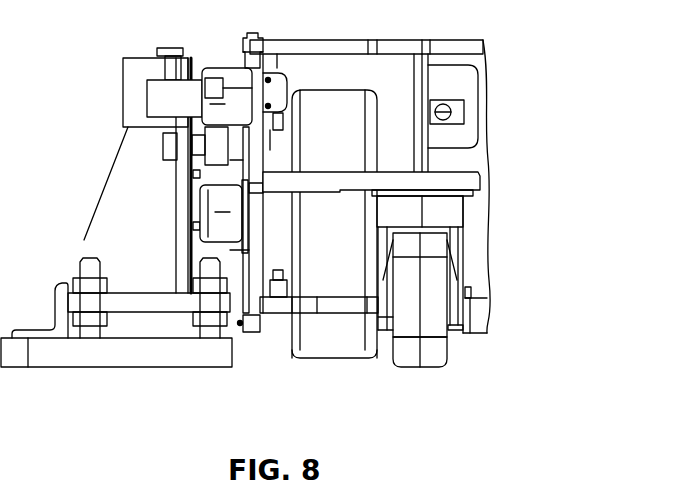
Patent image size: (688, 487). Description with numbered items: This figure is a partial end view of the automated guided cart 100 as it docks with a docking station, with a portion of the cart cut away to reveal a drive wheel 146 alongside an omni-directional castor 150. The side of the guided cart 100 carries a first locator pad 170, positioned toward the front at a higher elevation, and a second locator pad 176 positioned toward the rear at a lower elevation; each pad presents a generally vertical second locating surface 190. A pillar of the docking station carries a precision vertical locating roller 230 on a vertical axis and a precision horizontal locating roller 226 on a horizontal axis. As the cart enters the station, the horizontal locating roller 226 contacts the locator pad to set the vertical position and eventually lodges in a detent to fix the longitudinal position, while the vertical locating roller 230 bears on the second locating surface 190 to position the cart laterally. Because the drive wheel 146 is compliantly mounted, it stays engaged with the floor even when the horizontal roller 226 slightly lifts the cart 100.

The automated guided cart 100 is at (432, 221).
The drive wheel 146 is at (333, 358).
The omni-directional castor 150 is at (432, 367).
The first locator pad 170 is at (219, 68).
The second locator pad 176 is at (224, 198).
The second locating surface 190 is at (218, 108).
The horizontal locating roller 226 is at (217, 145).
The vertical locating roller 230 is at (157, 90).